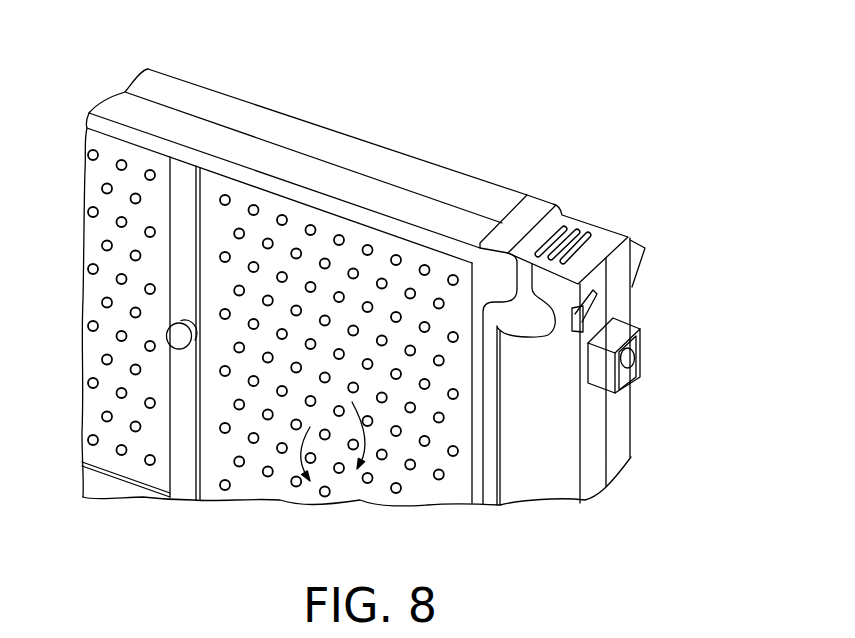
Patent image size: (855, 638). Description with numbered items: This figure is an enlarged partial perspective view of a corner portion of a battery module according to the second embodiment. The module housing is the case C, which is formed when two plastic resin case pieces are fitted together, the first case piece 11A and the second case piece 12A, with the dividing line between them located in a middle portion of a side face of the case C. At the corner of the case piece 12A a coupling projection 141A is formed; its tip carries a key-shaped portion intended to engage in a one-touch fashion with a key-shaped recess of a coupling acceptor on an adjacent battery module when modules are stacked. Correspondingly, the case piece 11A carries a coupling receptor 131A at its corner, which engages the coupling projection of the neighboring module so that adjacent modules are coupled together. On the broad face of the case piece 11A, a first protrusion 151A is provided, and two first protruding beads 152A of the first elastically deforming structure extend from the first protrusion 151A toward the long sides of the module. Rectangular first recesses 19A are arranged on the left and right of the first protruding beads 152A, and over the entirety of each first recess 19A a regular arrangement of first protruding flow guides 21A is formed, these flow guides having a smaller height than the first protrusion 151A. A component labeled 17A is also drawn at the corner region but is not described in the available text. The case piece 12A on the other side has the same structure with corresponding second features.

The first case piece 11A is at (188, 132).
The second case piece 12A is at (268, 122).
The coupling projection 141A is at (647, 248).
The coupling receptor 131A is at (538, 320).
The camera unit 17A is at (487, 364).
The first protrusion 151A is at (181, 346).
The first protruding beads 152A is at (187, 433).
The first recesses 19A is at (285, 465).
The first protruding flow guides 21A is at (378, 458).
The case C is at (337, 80).